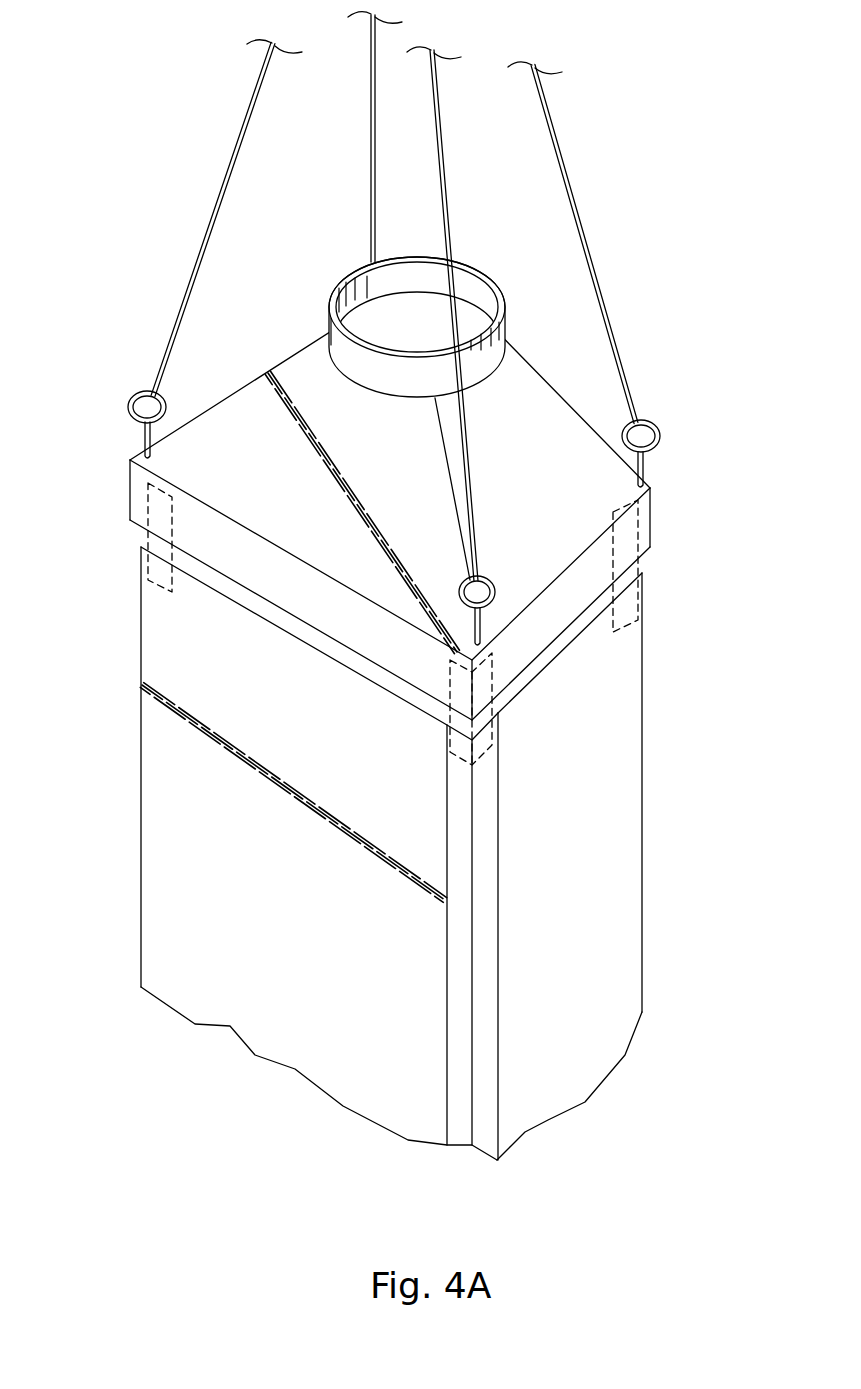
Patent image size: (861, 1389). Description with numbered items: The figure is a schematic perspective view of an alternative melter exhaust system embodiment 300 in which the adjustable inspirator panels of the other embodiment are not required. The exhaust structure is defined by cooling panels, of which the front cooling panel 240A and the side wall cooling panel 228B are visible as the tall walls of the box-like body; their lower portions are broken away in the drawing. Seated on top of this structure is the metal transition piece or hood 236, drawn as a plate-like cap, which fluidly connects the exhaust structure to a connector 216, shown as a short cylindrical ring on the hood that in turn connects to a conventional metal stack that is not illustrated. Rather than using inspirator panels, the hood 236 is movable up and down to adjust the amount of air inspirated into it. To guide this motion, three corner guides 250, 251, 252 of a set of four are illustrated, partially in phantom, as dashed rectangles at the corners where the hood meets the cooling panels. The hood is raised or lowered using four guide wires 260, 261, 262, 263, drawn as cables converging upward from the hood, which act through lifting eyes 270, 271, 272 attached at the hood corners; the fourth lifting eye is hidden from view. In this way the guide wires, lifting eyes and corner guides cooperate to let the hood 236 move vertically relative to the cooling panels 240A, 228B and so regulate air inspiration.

The alternative embodiment 300 is at (690, 56).
The connector 216 is at (502, 290).
The hood 236 is at (543, 412).
The front cooling panel 240A is at (157, 820).
The side wall cooling panel 228B is at (630, 757).
The corner guide 250 is at (142, 539).
The corner guide 251 is at (452, 722).
The corner guide 252 is at (645, 570).
The guide wire 260 is at (185, 284).
The guide wire 261 is at (371, 182).
The guide wire 262 is at (454, 204).
The guide wire 263 is at (568, 148).
The lifting eye 270 is at (129, 406).
The lifting eye 271 is at (488, 577).
The lifting eye 272 is at (661, 440).